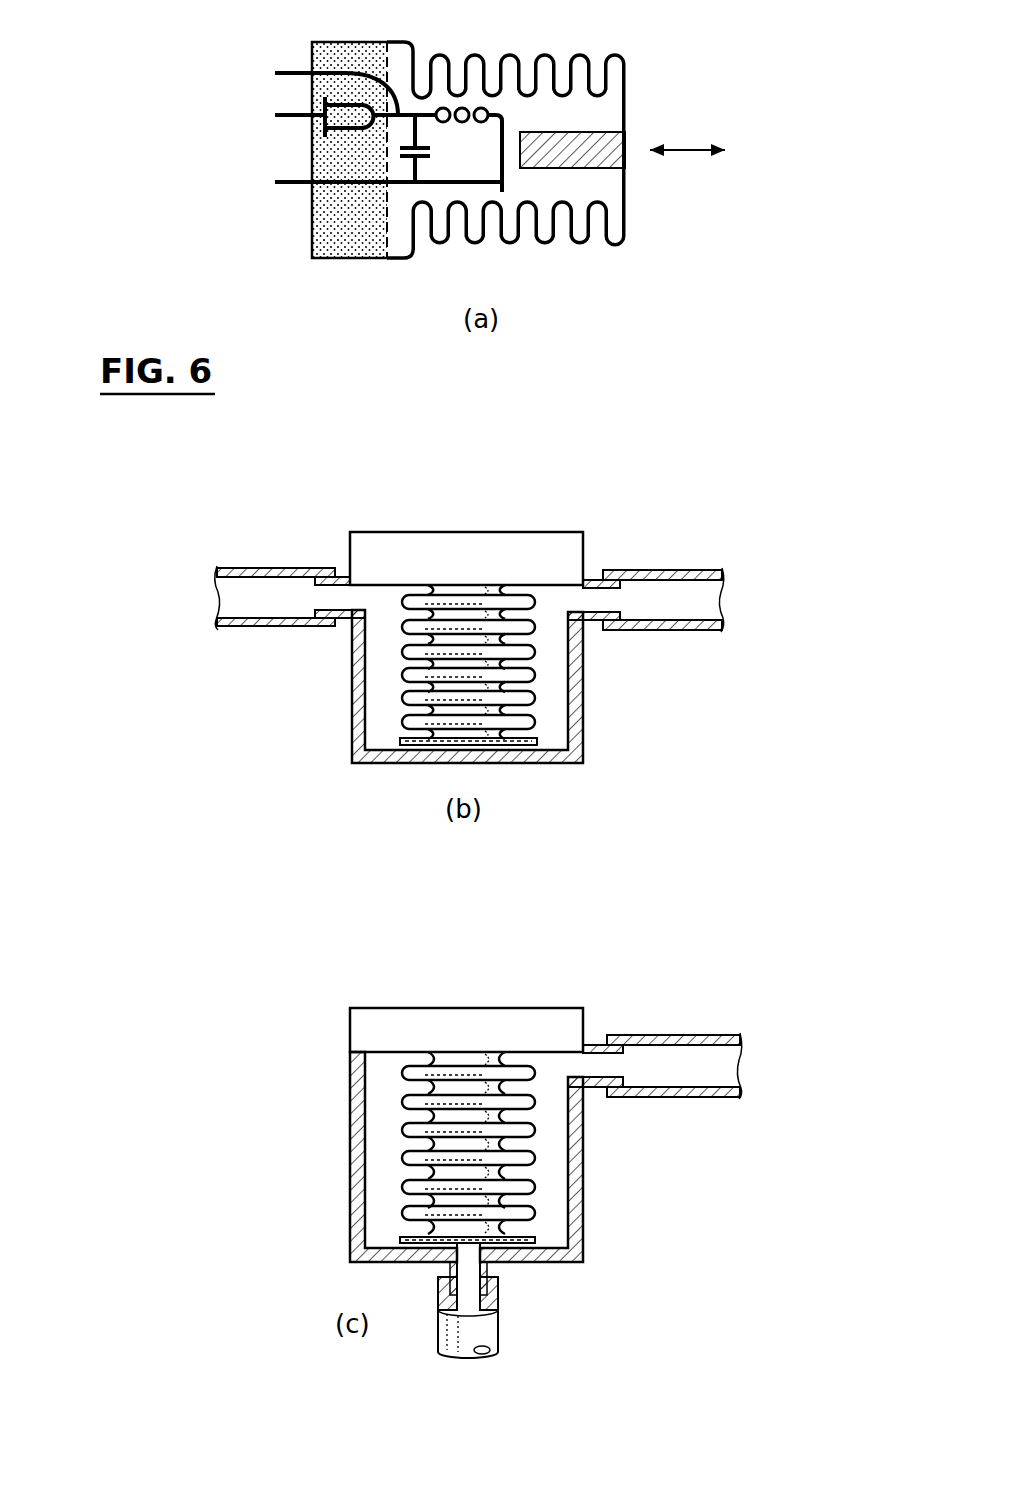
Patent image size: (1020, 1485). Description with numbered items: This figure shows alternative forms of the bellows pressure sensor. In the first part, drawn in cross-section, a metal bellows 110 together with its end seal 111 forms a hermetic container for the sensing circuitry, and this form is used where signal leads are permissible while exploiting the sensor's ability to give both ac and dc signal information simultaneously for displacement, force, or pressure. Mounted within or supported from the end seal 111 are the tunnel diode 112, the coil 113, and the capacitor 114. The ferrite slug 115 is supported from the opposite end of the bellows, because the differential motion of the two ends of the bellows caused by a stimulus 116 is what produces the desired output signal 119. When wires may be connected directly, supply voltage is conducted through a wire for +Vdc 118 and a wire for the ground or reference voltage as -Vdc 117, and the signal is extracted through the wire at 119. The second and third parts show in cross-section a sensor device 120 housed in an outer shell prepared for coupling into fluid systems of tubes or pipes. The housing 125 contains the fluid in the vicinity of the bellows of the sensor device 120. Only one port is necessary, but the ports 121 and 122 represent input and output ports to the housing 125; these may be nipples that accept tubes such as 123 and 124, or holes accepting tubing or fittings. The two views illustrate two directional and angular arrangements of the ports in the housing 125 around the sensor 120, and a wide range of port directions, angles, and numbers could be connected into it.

The metal bellows 110 is at (413, 42).
The end seal 111 is at (312, 42).
The tunnel diode 112 is at (372, 108).
The coil 113 is at (498, 117).
The capacitor 114 is at (420, 158).
The ferrite slug 115 is at (592, 132).
The stimulus 116 is at (722, 165).
The wire for -Vdc 117 is at (307, 186).
The wire for +Vdc 118 is at (218, 118).
The output signal 119 is at (216, 87).
The sensor device 120 is at (493, 532).
The port 121 is at (343, 577).
The port 122 is at (590, 580).
The tube 123 is at (258, 568).
The tube 124 is at (722, 610).
The housing 125 is at (580, 712).